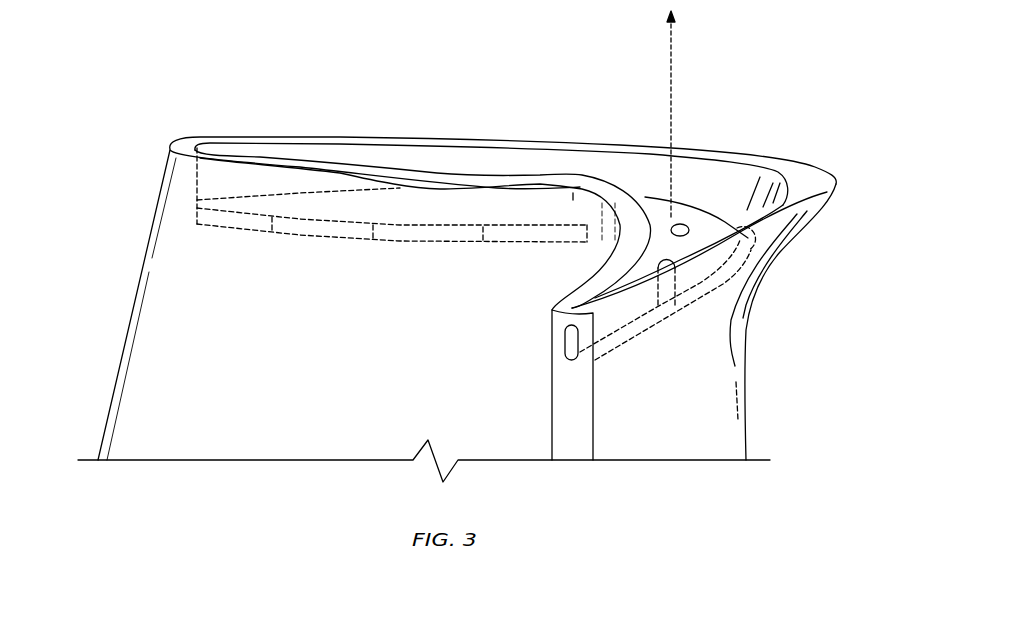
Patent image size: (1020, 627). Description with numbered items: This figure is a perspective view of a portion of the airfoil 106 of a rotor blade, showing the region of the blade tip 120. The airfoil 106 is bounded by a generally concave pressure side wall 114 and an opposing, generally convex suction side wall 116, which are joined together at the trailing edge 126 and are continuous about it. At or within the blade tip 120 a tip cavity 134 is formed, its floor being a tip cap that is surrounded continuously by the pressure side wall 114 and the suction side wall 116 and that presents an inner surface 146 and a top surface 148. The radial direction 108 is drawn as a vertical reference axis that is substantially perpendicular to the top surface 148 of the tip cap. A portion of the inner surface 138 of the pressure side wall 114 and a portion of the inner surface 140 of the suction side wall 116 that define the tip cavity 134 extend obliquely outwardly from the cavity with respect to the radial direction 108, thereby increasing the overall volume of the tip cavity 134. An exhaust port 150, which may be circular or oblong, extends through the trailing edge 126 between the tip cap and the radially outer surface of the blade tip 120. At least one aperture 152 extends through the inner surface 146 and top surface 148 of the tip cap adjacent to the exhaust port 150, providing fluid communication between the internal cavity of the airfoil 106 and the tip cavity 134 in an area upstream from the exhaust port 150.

The airfoil 106 is at (789, 93).
The radial direction 108 is at (672, 77).
The pressure side wall 114 is at (172, 333).
The suction side wall 116 is at (789, 258).
The blade tip 120 is at (130, 178).
The trailing edge 126 is at (563, 386).
The tip cavity 134 is at (478, 143).
The inner surface of the pressure side wall 138 is at (434, 163).
The inner surface of the suction side wall 140 is at (635, 176).
The inner surface of the tip cap 146 is at (569, 238).
The top surface of the tip cap 148 is at (684, 219).
The exhaust port 150 is at (570, 337).
The aperture 152 is at (680, 297).